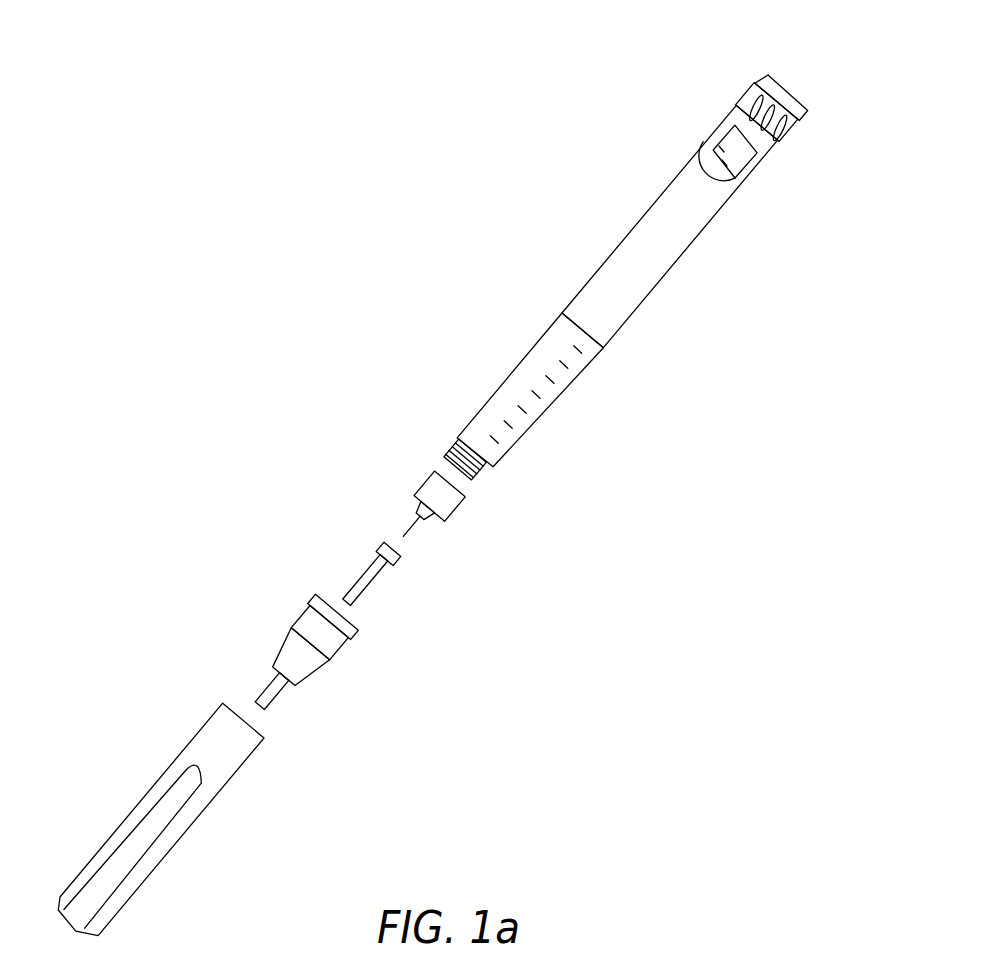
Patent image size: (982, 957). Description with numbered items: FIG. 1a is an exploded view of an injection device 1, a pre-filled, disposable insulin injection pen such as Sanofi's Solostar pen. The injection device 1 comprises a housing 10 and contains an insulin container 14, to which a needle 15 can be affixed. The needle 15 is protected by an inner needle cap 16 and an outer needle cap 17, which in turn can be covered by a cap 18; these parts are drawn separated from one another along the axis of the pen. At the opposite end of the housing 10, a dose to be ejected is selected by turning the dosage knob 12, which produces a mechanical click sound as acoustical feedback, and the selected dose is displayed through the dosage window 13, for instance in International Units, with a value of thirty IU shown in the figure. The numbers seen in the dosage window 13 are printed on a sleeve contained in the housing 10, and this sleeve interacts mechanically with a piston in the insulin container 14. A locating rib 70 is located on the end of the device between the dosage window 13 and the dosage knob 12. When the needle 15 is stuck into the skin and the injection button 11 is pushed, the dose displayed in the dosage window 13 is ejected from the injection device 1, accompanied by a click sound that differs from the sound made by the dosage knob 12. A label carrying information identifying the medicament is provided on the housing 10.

The injection device 1 is at (494, 267).
The housing 10 is at (640, 234).
The injection button 11 is at (800, 80).
The dosage knob 12 is at (729, 90).
The dosage window 13 is at (708, 155).
The locating rib 70 is at (756, 132).
The insulin container 14 is at (517, 380).
The needle 15 is at (430, 486).
The inner needle cap 16 is at (364, 575).
The outer needle cap 17 is at (306, 622).
The cap 18 is at (202, 735).